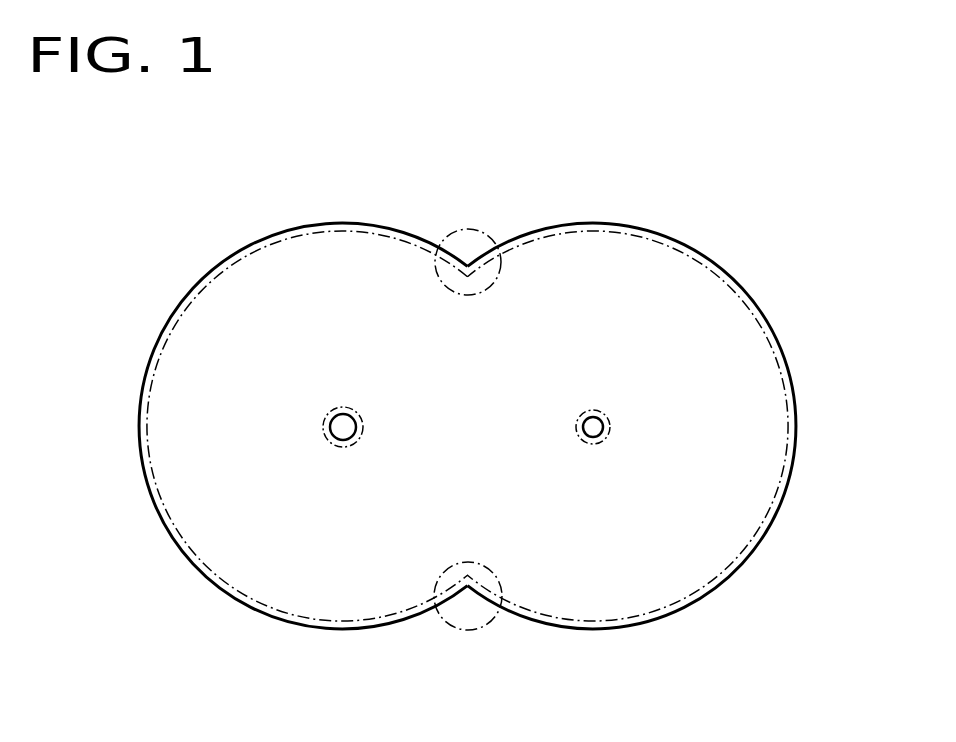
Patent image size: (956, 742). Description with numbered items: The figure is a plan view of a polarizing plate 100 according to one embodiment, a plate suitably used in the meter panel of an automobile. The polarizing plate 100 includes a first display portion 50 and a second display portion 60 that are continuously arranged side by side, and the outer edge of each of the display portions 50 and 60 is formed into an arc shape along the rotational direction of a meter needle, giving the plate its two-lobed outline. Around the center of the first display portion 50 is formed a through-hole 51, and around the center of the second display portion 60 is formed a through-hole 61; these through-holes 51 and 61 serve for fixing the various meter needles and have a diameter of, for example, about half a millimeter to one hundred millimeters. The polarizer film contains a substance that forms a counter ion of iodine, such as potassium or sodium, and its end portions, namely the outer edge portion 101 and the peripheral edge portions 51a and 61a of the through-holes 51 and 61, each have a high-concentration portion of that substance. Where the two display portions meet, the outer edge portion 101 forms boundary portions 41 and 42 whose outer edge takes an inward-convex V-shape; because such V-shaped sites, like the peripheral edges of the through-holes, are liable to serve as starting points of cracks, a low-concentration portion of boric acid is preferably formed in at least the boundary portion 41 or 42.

The polarizing plate 100 is at (816, 222).
The outer edge portion 101 is at (793, 460).
The first display portion 50 is at (198, 380).
The through-hole 51 is at (330, 413).
The peripheral edge portion 51a is at (323, 423).
The second display portion 60 is at (738, 345).
The through-hole 61 is at (603, 440).
The peripheral edge portion 61a is at (607, 425).
The boundary portion 41 is at (467, 265).
The boundary portion 42 is at (468, 588).